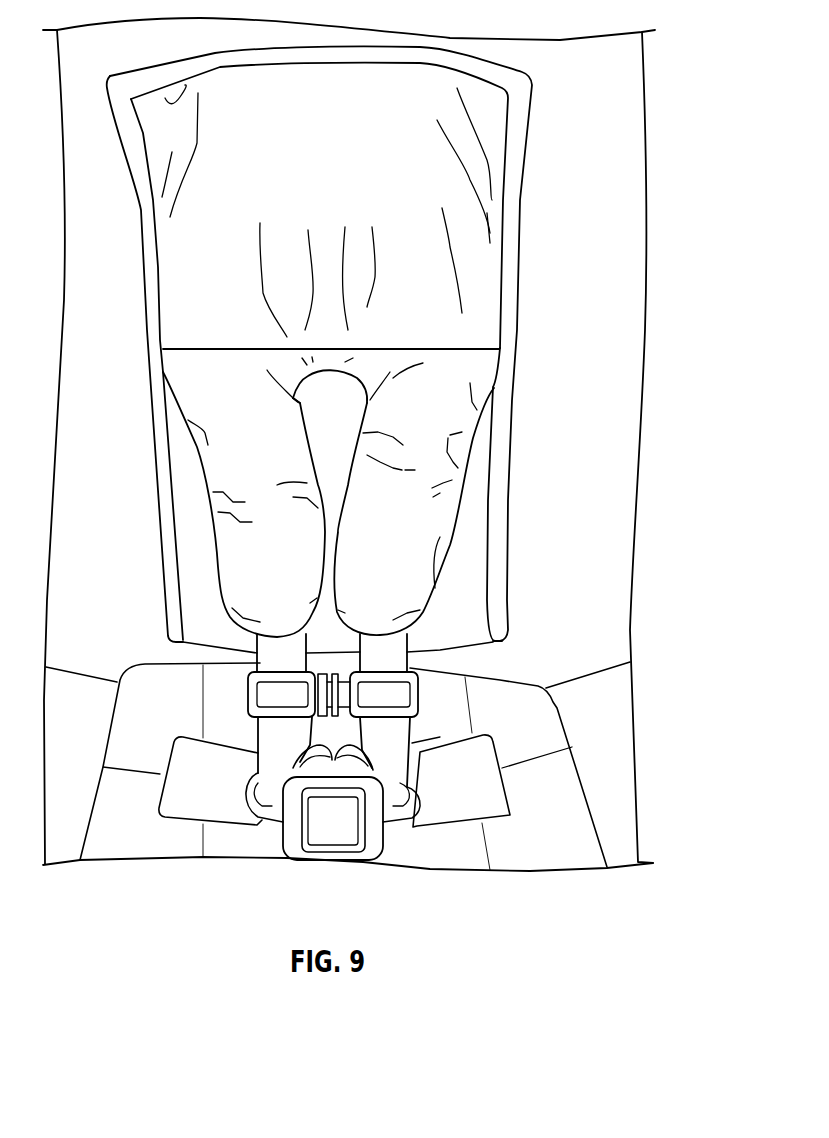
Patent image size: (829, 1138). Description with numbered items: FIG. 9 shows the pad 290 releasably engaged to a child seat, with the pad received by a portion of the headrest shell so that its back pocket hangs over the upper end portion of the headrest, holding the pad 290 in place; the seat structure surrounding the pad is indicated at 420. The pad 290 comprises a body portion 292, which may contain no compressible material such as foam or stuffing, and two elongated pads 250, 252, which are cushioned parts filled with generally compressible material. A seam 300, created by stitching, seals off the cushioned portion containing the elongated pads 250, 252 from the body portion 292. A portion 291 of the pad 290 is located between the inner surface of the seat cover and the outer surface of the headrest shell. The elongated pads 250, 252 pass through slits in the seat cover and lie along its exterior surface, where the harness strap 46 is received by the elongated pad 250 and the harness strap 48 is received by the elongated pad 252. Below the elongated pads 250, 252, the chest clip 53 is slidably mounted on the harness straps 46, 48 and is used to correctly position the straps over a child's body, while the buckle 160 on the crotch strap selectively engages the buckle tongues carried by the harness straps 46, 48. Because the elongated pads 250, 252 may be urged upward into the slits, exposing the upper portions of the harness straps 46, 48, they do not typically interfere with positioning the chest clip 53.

The seat shell 420 is at (613, 338).
The pad 290 is at (523, 197).
The portion of the pad 291 is at (473, 136).
The body portion 292 is at (342, 146).
The seam 300 is at (400, 348).
The elongated pad 250 is at (232, 554).
The elongated pad 252 is at (447, 516).
The harness strap 46 is at (257, 658).
The harness strap 48 is at (407, 658).
The chest clip 53 is at (418, 690).
The buckle 160 is at (377, 832).